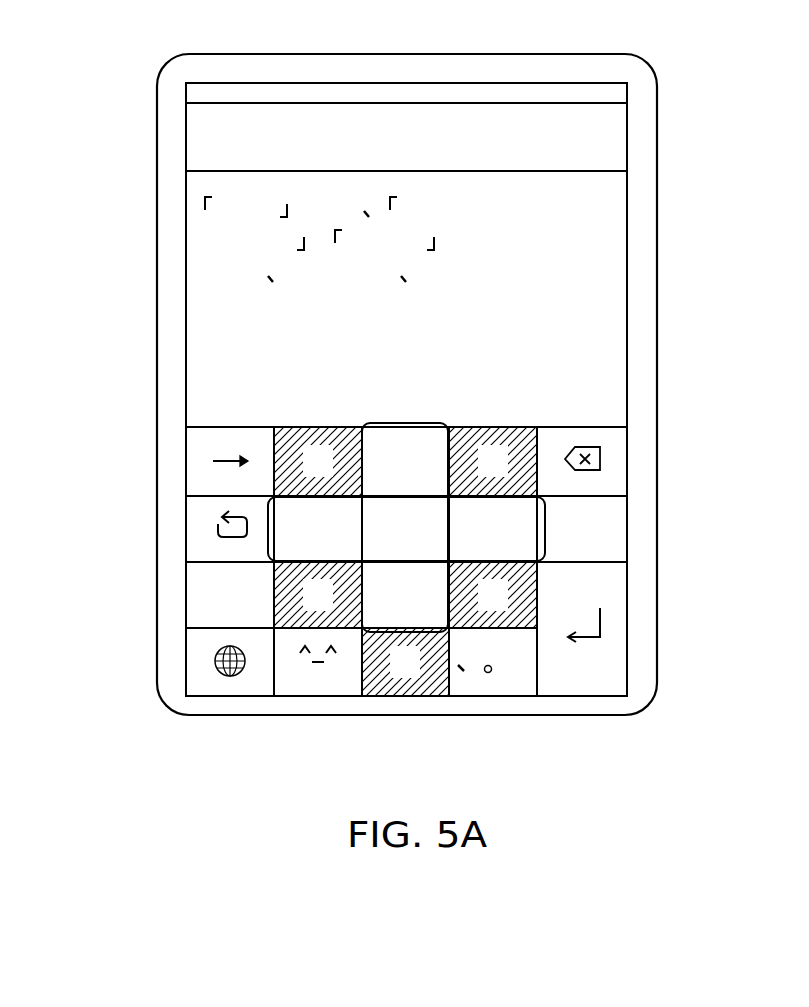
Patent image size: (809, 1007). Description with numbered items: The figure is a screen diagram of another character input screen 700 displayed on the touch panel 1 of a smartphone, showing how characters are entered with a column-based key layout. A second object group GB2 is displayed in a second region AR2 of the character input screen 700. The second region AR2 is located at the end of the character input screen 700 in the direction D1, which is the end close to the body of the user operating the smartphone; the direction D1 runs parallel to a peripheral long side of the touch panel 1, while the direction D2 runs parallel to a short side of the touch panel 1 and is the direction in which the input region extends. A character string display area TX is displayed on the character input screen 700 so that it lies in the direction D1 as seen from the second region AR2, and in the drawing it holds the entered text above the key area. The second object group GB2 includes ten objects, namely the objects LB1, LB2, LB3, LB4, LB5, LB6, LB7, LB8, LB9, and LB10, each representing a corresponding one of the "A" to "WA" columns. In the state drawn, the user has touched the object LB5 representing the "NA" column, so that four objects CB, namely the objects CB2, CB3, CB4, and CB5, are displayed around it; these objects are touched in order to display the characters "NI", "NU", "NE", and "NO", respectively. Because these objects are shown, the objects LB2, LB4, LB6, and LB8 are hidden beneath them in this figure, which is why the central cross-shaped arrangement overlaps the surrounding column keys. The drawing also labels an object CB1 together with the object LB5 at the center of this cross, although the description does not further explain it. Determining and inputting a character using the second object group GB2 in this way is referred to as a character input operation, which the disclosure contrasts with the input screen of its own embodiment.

The character input screen 700 is at (434, 428).
The touch panel 1 is at (238, 699).
The character string display area TX is at (616, 275).
The direction D1 is at (686, 381).
The direction D2 is at (737, 451).
The second region AR2 is at (434, 585).
The second object group GB2 is at (638, 527).
The object LB1 is at (337, 430).
The object LB2 is at (422, 432).
The object LB3 is at (512, 515).
The object LB4 is at (230, 476).
The object LB5 is at (477, 628).
The object LB6 is at (583, 497).
The object LB7 is at (293, 617).
The object LB8 is at (400, 712).
The object LB9 is at (427, 533).
The object LB10 is at (373, 724).
The character box CB1 is at (477, 628).
The object CB2 is at (303, 508).
The object CB3 is at (393, 434).
The object CB4 is at (537, 470).
The object CB5 is at (420, 627).